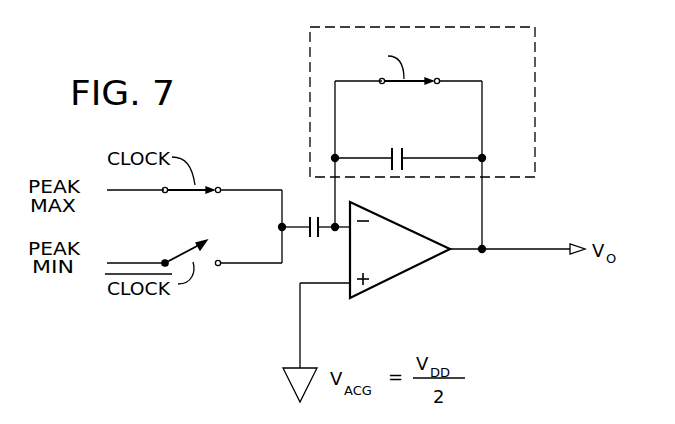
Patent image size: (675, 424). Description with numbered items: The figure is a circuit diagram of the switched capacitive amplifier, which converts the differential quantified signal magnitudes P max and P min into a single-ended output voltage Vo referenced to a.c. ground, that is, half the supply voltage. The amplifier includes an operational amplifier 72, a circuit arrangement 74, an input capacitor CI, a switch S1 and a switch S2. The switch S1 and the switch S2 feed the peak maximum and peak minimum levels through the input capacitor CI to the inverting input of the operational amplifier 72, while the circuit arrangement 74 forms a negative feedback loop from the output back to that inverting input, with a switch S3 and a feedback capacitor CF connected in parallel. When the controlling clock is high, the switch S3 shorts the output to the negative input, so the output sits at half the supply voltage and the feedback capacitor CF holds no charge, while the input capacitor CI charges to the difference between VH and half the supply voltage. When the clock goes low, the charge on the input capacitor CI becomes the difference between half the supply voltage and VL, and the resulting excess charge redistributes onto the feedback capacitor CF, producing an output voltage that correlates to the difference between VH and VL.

The operational amplifier 72 is at (408, 272).
The circuit arrangement 74 is at (452, 96).
The switch S1 is at (191, 201).
The switch S2 is at (198, 250).
The switch S3 is at (409, 92).
The input capacitor CI is at (307, 211).
The feedback capacitor CF is at (413, 147).